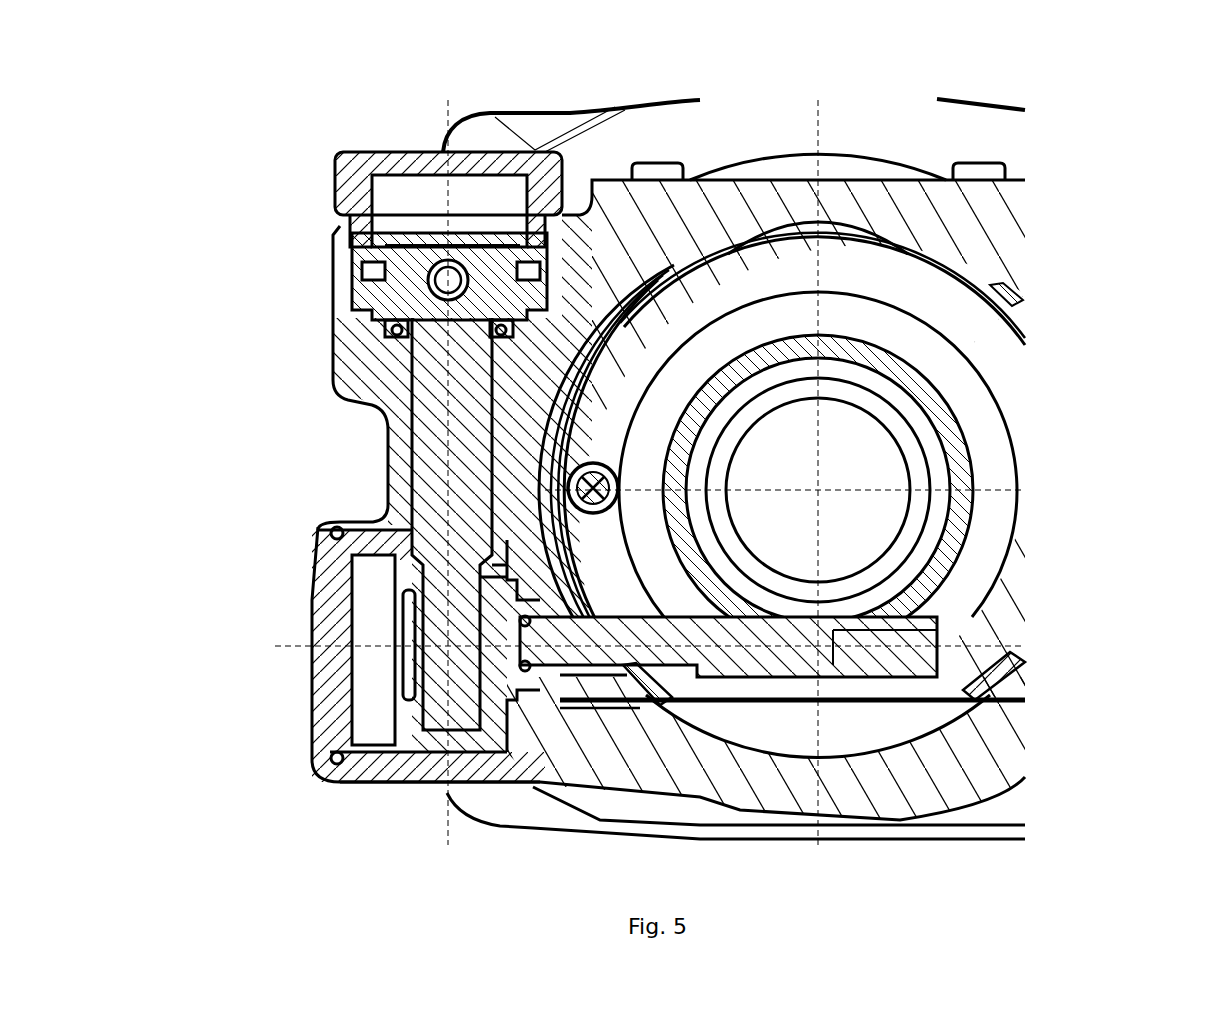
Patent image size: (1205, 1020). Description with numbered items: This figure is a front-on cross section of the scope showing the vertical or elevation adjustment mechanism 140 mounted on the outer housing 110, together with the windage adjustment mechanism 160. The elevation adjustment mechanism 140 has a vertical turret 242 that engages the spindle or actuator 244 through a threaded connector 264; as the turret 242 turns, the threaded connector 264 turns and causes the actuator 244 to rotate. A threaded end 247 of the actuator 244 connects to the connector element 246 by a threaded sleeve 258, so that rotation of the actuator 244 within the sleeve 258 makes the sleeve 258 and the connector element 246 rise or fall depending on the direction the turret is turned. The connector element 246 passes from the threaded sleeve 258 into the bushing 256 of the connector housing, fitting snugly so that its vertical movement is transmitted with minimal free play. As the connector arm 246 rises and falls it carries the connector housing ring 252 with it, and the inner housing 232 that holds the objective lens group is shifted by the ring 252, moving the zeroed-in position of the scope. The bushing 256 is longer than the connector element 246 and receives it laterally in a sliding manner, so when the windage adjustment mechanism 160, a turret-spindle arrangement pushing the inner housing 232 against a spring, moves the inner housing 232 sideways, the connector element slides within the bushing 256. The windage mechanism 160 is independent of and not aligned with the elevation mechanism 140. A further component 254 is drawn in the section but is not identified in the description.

The vertical adjustment mechanism 140 is at (555, 98).
The vertical turret 242 is at (335, 165).
The threaded connector 264 is at (350, 300).
The actuator 244 is at (423, 447).
The outer housing 110 is at (1000, 214).
The windage adjustment mechanism 160 is at (313, 610).
The inner housing 232 is at (953, 443).
The connector housing ring 252 is at (947, 543).
The plate 254 is at (927, 608).
The bushing 256 is at (920, 660).
The threaded sleeve 258 is at (418, 727).
The end of the actuator 247 is at (475, 717).
The connector element 246 is at (567, 655).